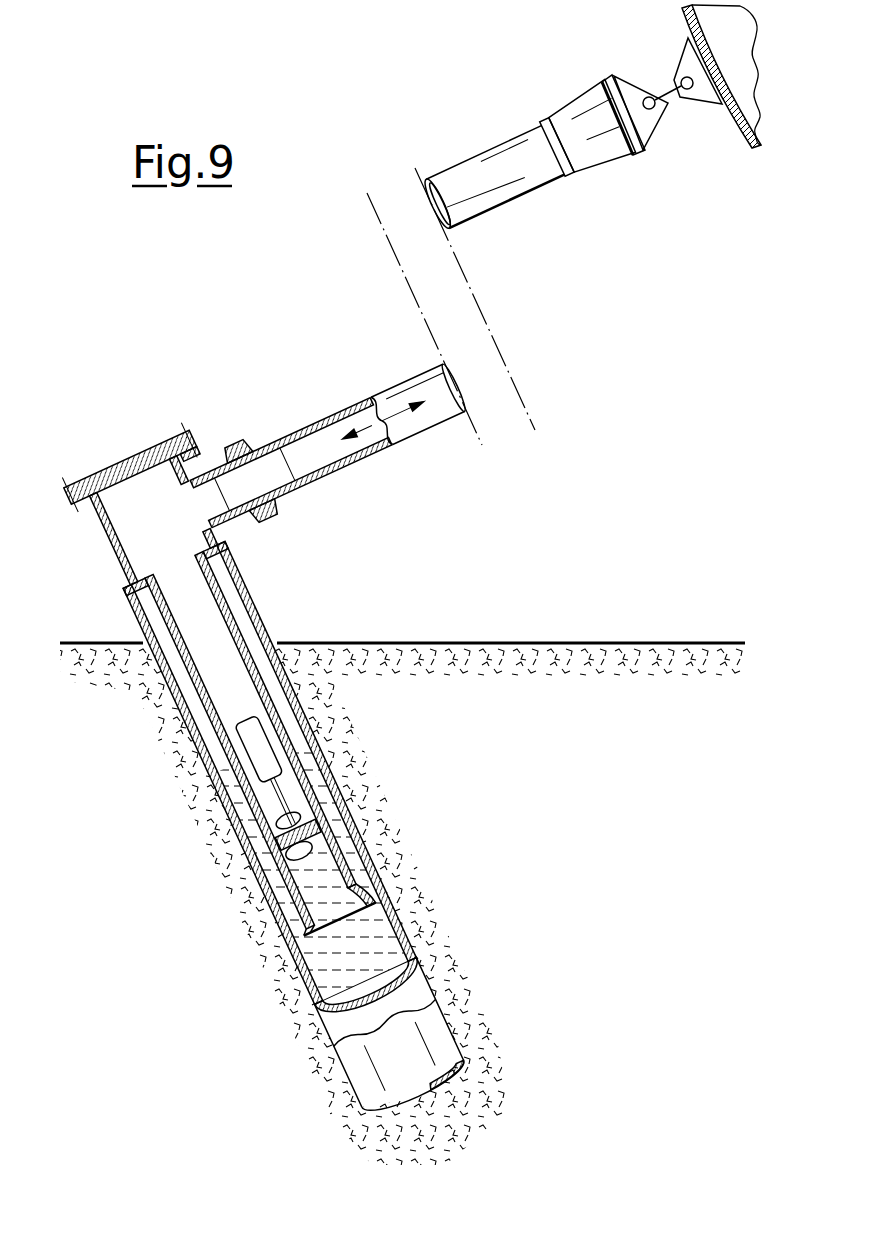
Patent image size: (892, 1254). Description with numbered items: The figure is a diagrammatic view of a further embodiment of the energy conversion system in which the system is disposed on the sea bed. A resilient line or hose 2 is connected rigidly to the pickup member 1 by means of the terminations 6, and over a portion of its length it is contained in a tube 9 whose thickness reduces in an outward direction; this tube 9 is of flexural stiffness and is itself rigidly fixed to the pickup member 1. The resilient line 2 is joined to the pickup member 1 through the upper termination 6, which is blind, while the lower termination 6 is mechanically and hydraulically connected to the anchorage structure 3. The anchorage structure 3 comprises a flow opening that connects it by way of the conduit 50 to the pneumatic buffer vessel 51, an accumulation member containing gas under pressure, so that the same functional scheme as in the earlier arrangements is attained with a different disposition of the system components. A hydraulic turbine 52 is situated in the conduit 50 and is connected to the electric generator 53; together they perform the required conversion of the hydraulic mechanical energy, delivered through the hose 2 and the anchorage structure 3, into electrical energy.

The pickup member 1 is at (734, 131).
The resilient line or hose 2 is at (528, 178).
The anchorage structure 3 is at (105, 543).
The termination 6 is at (603, 150).
The tube 9 is at (257, 445).
The conduit 50 is at (264, 637).
The pneumatic buffer vessel 51 is at (226, 584).
The hydraulic turbine 52 is at (290, 843).
The electric generator 53 is at (263, 751).